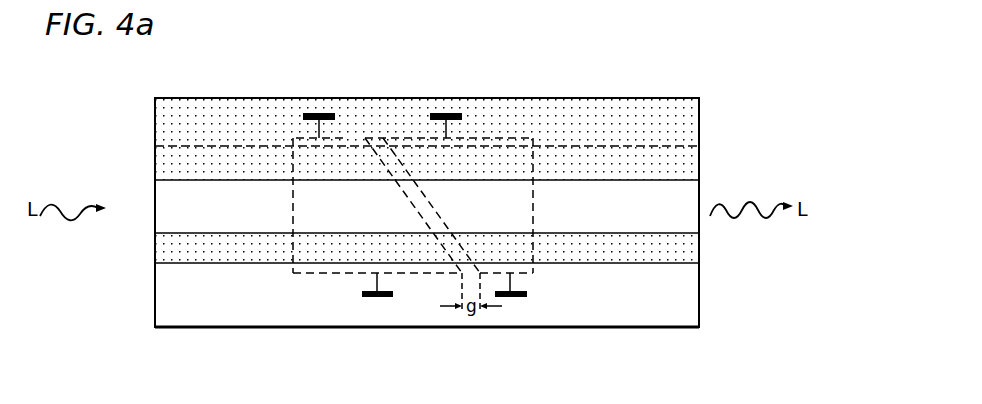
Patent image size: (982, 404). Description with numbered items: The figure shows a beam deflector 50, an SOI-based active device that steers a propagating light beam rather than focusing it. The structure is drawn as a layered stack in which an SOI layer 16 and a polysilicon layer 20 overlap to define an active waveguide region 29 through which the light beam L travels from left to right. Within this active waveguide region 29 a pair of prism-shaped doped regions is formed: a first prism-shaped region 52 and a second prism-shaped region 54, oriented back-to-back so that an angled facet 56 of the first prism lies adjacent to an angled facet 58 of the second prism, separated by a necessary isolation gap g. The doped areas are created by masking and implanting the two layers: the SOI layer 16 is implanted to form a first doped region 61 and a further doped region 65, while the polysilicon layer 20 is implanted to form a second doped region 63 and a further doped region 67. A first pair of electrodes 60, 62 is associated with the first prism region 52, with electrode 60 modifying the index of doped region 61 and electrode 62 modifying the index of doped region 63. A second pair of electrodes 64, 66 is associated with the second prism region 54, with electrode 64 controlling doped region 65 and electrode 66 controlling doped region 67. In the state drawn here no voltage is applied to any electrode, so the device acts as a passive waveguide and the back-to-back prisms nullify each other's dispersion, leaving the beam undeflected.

The beam deflector 50 is at (663, 38).
The polysilicon layer 20 is at (165, 116).
The active waveguide region 29 is at (155, 147).
The SOI layer 16 is at (165, 290).
The first prism-shaped doped region 52 is at (300, 168).
The second doped region 63 is at (298, 138).
The electrode 62 is at (321, 113).
The angled facet 56 is at (368, 157).
The electrode 66 is at (446, 113).
The angled facet 58 is at (428, 210).
The second prism-shaped doped region 54 is at (512, 138).
The doped region 67 is at (533, 138).
The first doped region 61 is at (312, 275).
The electrode 60 is at (377, 297).
The electrode 64 is at (514, 297).
The doped region 65 is at (520, 272).